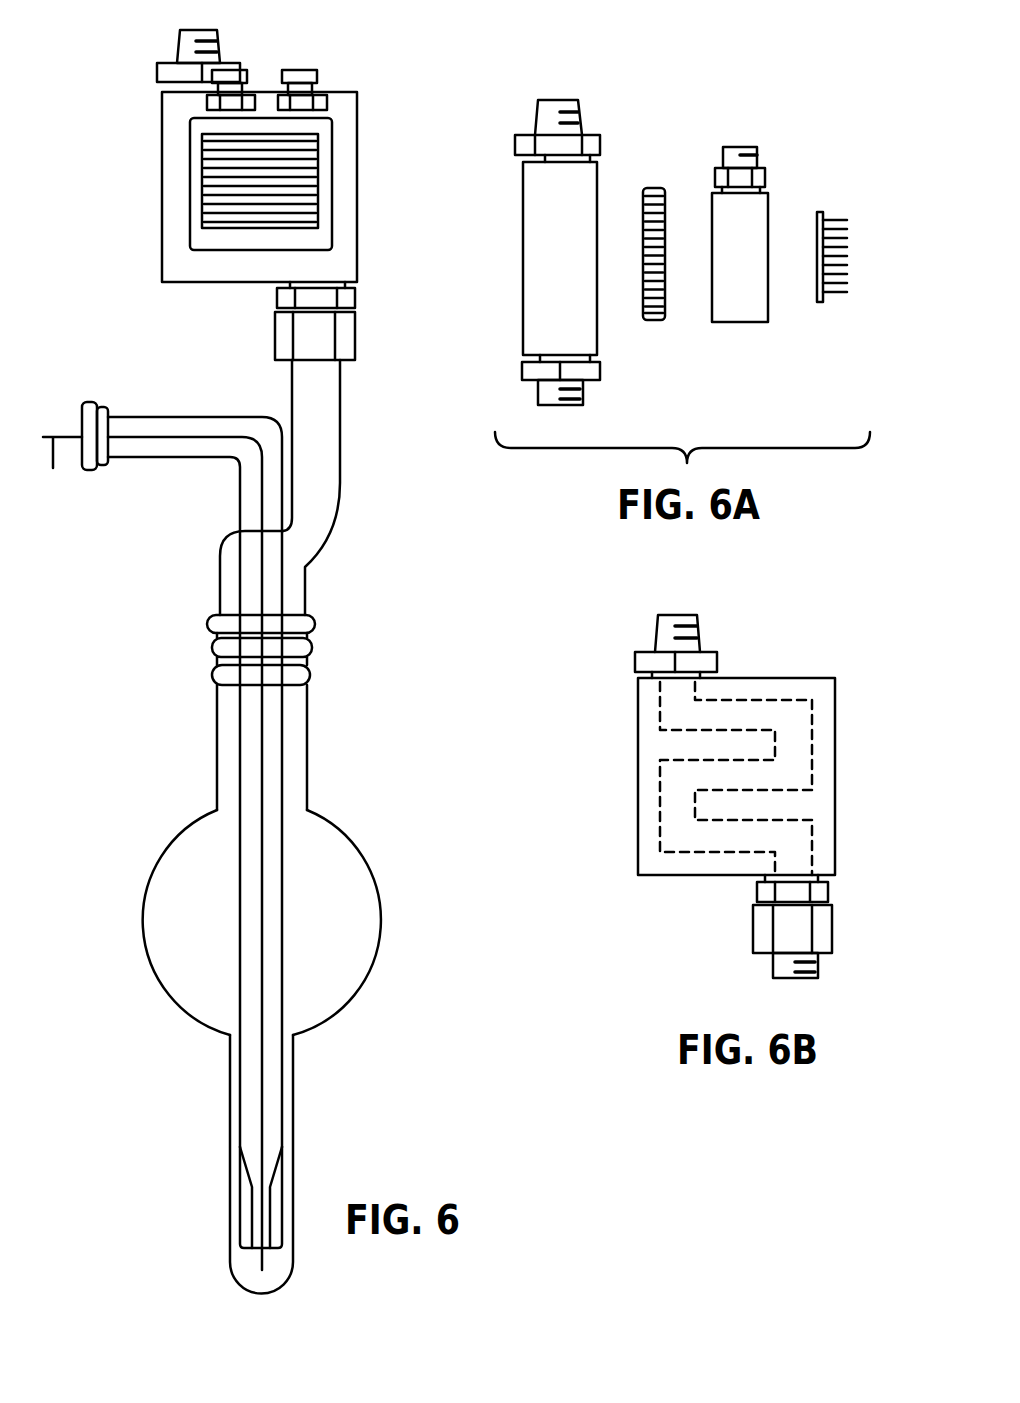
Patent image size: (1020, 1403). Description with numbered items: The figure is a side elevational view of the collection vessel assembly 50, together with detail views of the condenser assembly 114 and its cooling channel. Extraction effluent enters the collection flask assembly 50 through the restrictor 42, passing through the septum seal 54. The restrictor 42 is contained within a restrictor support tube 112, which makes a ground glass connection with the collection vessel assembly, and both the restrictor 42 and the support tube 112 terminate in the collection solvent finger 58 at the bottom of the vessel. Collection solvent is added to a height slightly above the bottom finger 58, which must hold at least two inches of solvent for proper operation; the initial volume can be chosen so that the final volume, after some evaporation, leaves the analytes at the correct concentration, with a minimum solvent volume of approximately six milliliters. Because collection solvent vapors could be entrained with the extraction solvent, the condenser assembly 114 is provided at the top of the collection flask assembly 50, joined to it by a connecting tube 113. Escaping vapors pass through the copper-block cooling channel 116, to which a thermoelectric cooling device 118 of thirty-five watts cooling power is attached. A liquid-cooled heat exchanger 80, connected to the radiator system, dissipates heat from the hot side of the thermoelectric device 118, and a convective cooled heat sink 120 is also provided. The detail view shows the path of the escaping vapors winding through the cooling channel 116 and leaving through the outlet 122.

In FIG. 6, the restrictor 42 is at (57, 469).
In FIG. 6, the collection vessel assembly 50 is at (162, 860).
In FIG. 6, the septum seal 54 is at (85, 471).
In FIG. 6, the collection solvent finger 58 is at (232, 1268).
In FIG. 6A, the liquid-cooled heat exchanger 80 is at (710, 184).
In FIG. 6, the restrictor support tube 112 is at (289, 844).
In FIG. 6, the connecting tube 113 is at (286, 383).
In FIG. 6, the condenser assembly 114 is at (156, 134).
In FIG. 6A, the copper-block cooling channel 116 is at (515, 184).
In FIG. 6B, the copper-block cooling channel 116 is at (815, 677).
In FIG. 6A, the thermoelectric cooling device 118 is at (648, 182).
In FIG. 6A, the convective cooled heat sink 120 is at (815, 308).
In FIG. 6B, the outlet 122 is at (717, 655).